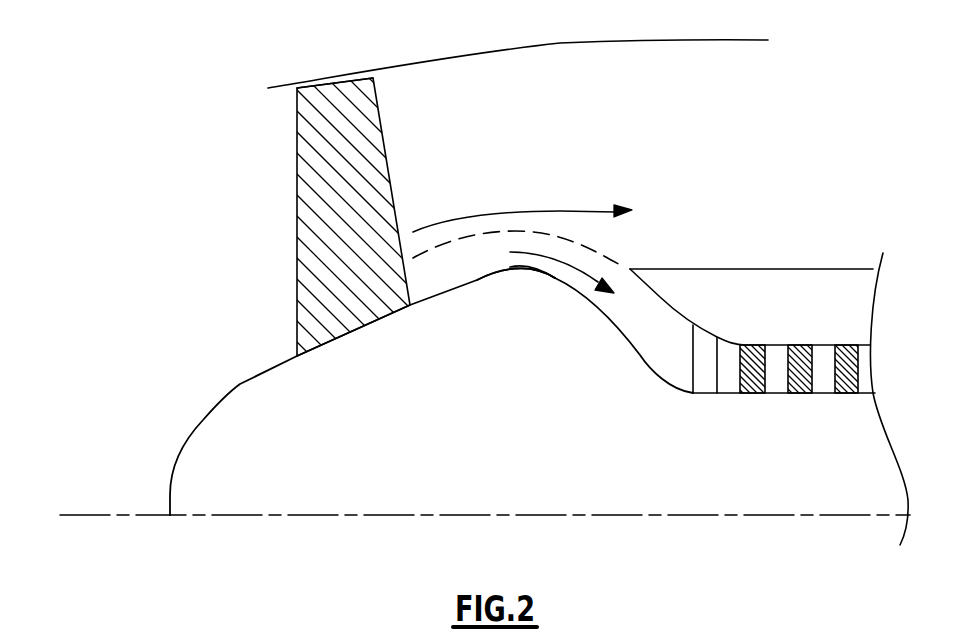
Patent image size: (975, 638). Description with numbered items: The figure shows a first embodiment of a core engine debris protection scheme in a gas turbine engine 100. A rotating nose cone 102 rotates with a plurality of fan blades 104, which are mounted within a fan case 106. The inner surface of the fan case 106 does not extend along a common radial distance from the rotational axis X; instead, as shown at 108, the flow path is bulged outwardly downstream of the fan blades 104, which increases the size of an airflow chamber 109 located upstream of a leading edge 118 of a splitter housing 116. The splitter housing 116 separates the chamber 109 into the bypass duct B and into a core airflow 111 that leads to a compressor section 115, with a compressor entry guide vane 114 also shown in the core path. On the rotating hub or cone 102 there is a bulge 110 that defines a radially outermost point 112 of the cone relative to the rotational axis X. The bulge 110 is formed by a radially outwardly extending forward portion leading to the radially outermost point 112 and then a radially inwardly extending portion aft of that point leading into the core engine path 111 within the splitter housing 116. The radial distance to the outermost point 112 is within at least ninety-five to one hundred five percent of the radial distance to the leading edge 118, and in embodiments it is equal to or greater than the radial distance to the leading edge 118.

The gas turbine engine 100 is at (106, 535).
The rotating nose cone 102 is at (223, 440).
The fan blades 104 is at (317, 218).
The fan case 106 is at (328, 83).
The outwardly bulged flow path 108 is at (506, 44).
The airflow chamber 109 is at (563, 163).
The bulge 110 is at (495, 275).
The core airflow 111 is at (590, 286).
The radially outermost point 112 is at (525, 270).
The compressor entry guide vane 114 is at (717, 366).
The compressor section 115 is at (853, 394).
The splitter housing 116 is at (730, 297).
The leading edge 118 is at (631, 268).
The bypass duct B is at (744, 153).
The rotational axis X is at (298, 517).